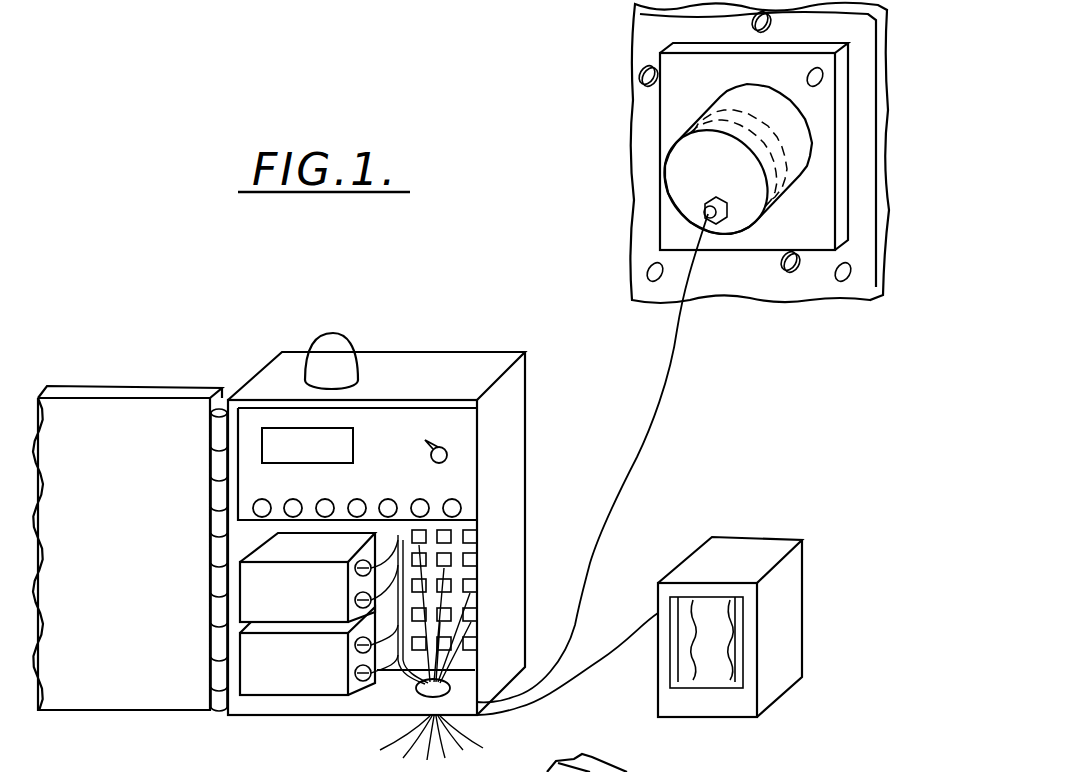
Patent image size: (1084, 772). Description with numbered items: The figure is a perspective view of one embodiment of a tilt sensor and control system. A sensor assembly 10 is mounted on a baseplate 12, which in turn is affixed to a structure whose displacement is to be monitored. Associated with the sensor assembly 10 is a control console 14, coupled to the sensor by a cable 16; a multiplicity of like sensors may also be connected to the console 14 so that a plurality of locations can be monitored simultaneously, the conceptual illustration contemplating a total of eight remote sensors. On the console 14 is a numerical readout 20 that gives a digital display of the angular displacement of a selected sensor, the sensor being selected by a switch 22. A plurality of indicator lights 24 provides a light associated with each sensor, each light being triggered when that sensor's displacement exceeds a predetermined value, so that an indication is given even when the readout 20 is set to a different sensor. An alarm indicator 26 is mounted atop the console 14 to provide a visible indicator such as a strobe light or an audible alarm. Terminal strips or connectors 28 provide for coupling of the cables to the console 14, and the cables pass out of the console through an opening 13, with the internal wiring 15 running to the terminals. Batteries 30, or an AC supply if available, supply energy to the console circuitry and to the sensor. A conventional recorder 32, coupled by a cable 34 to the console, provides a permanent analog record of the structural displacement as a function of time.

The sensor assembly 10 is at (680, 160).
The baseplate 12 is at (767, 242).
The wire outlet hole 13 is at (397, 723).
The control console 14 is at (455, 352).
The wiring 15 is at (392, 537).
The cable 16 is at (662, 402).
The numerical readout 20 is at (268, 427).
The switch 22 is at (448, 458).
The indicator lights 24 is at (430, 498).
The alarm indicator 26 is at (332, 333).
The terminal strips or connectors 28 is at (445, 553).
The batteries 30 is at (282, 683).
The recorder 32 is at (770, 545).
The cable 34 is at (623, 628).